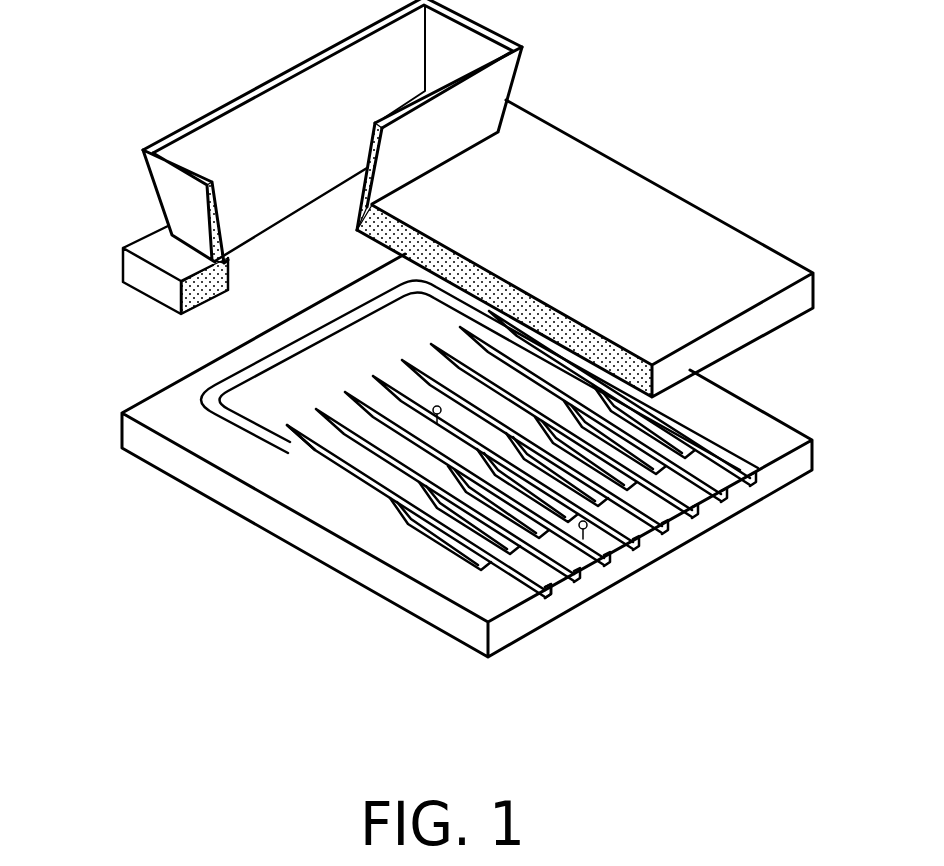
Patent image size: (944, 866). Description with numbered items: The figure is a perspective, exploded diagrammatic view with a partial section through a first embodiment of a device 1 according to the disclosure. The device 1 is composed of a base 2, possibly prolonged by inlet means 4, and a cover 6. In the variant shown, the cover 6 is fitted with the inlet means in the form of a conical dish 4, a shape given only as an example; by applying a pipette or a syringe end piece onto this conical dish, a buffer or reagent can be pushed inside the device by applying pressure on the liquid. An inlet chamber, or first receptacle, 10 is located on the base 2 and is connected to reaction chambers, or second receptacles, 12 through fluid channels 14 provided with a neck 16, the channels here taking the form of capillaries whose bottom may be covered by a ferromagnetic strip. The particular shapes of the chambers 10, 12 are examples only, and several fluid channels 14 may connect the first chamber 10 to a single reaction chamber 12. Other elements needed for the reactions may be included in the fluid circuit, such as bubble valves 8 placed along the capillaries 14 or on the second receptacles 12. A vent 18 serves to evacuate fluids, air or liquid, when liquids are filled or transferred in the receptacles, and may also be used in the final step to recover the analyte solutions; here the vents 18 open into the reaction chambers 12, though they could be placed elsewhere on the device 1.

The device 1 is at (121, 214).
The base 2 is at (215, 480).
The inlet means 4 is at (250, 120).
The cover 6 is at (666, 230).
The bubble valves 8 is at (623, 543).
The inlet chamber 10 is at (347, 347).
The reaction chambers 12 is at (437, 532).
The fluid channels 14 is at (387, 467).
The neck 16 is at (287, 424).
The vent 18 is at (550, 593).